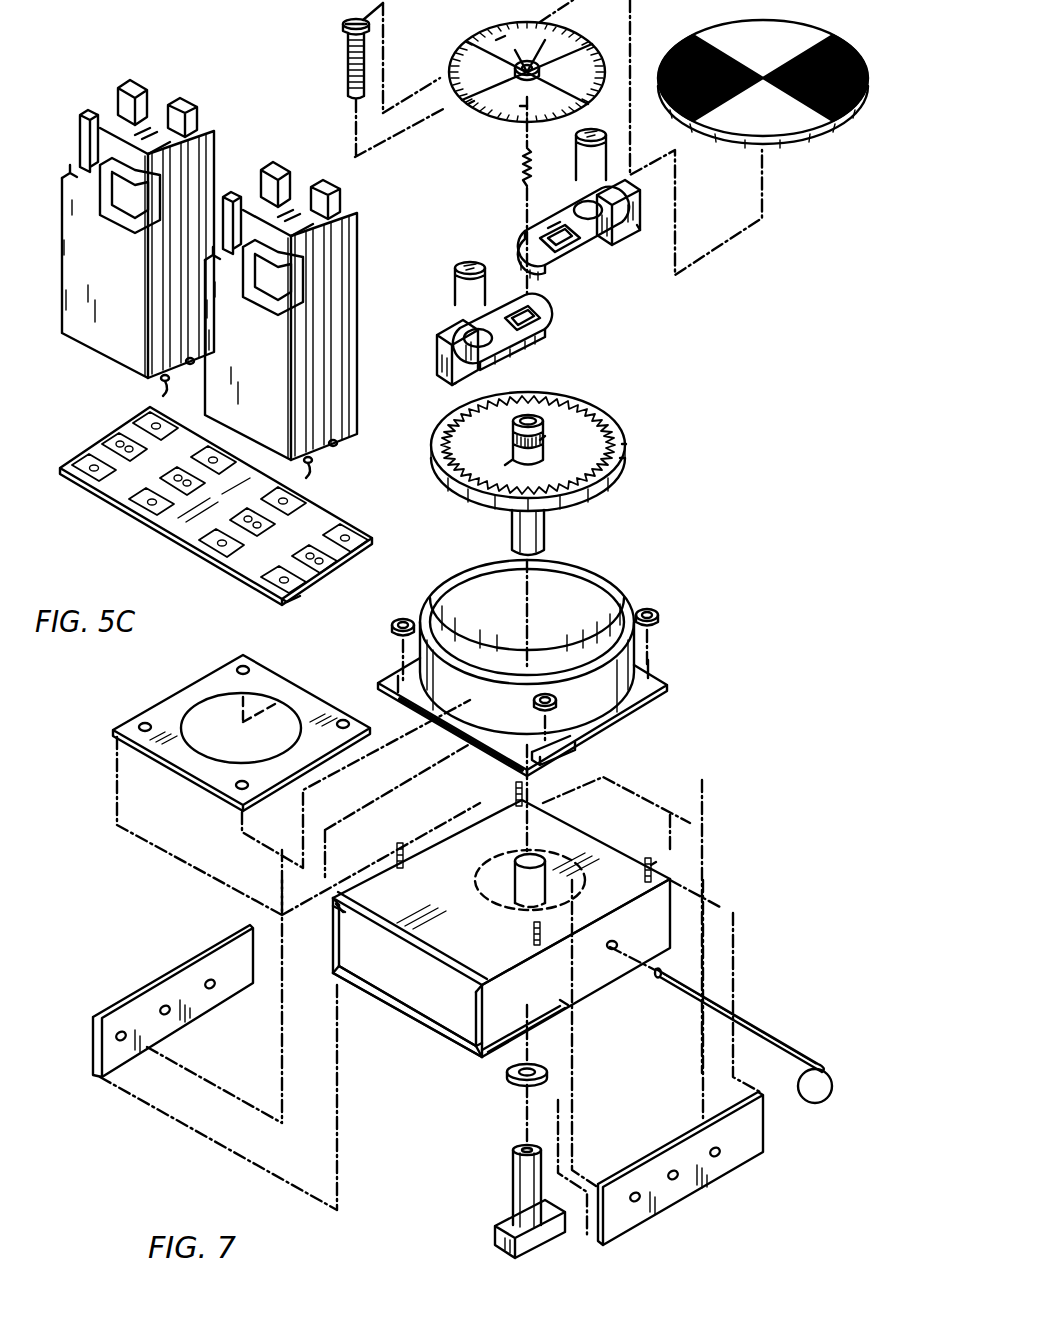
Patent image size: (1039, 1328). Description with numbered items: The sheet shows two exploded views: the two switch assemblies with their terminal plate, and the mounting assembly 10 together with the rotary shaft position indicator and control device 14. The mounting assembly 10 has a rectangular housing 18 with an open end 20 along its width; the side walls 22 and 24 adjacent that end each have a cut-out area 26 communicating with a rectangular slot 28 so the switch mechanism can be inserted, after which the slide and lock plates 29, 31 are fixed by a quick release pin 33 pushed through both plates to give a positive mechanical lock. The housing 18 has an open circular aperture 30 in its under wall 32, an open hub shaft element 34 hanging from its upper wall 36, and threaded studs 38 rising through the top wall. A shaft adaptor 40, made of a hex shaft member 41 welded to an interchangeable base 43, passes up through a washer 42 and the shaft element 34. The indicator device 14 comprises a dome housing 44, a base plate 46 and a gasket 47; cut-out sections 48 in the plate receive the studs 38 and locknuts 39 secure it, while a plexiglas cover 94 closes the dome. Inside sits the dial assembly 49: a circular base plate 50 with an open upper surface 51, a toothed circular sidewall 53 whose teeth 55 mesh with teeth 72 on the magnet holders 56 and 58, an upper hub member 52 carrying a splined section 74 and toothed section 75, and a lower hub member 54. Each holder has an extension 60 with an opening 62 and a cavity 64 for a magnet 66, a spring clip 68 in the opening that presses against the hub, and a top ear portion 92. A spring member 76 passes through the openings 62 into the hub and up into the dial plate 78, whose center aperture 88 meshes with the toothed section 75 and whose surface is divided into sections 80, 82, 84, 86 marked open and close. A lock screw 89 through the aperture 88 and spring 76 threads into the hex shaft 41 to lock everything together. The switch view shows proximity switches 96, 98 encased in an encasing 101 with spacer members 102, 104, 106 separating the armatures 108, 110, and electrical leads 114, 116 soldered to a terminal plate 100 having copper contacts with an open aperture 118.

In FIG. 7, the mounting assembly 10 is at (697, 898).
In FIG. 7, the rotary shaft position indicator and control device 14 is at (665, 638).
In FIG. 7, the rectangular housing 18 is at (607, 853).
In FIG. 7, the open end 20 is at (458, 1036).
In FIG. 7, the side wall 22 is at (560, 1008).
In FIG. 7, the side wall 24 is at (338, 962).
In FIG. 7, the cut-out area 26 is at (340, 936).
In FIG. 7, the rectangular slot 28 is at (345, 928).
In FIG. 7, the slide and lock plate 29 is at (690, 1185).
In FIG. 7, the open circular aperture 30 is at (575, 896).
In FIG. 7, the slide and lock plate 31 is at (140, 1000).
In FIG. 7, the under wall 32 is at (405, 1002).
In FIG. 7, the quick release pin 33 is at (775, 1040).
In FIG. 7, the open hub shaft element 34 is at (543, 856).
In FIG. 7, the upper wall 36 is at (568, 816).
In FIG. 7, the threaded stud 38 is at (656, 864).
In FIG. 7, the locknut 39 is at (656, 607).
In FIG. 7, the shaft adaptor 40 is at (501, 1178).
In FIG. 7, the hex shaft member 41 is at (511, 1196).
In FIG. 7, the washer 42 is at (510, 1086).
In FIG. 7, the interchangeable base 43 is at (497, 1245).
In FIG. 7, the dome housing 44 is at (590, 576).
In FIG. 7, the base plate 46 is at (633, 693).
In FIG. 7, the gasket 47 is at (160, 706).
In FIG. 7, the cut-out section 48 is at (550, 752).
In FIG. 7, the dial assembly 49 is at (663, 348).
In FIG. 7, the circular base plate 50 is at (610, 482).
In FIG. 7, the open upper surface 51 is at (492, 458).
In FIG. 7, the upper hub member 52 is at (546, 446).
In FIG. 7, the circular sidewall 53 is at (626, 446).
In FIG. 7, the lower hub member 54 is at (545, 531).
In FIG. 7, the tooth 55 is at (623, 456).
In FIG. 7, the magnet holder 56 is at (551, 268).
In FIG. 7, the magnet holder 58 is at (460, 372).
In FIG. 7, the extension 60 is at (552, 263).
In FIG. 7, the opening 62 is at (537, 244).
In FIG. 7, the cavity 64 is at (597, 202).
In FIG. 7, the magnet 66 is at (583, 134).
In FIG. 7, the spring clip 68 is at (556, 226).
In FIG. 7, the teeth 72 is at (638, 226).
In FIG. 7, the splined section 74 is at (512, 460).
In FIG. 7, the toothed section 75 is at (540, 440).
In FIG. 7, the spring member 76 is at (519, 180).
In FIG. 7, the dial plate 78 is at (585, 42).
In FIG. 7, the section 80 is at (496, 40).
In FIG. 7, the section 82 is at (603, 90).
In FIG. 7, the section 84 is at (522, 100).
In FIG. 7, the section 86 is at (470, 104).
In FIG. 7, the center aperture 88 is at (520, 106).
In FIG. 7, the lock screw 89 is at (348, 54).
In FIG. 7, the top ear portion 92 is at (627, 188).
In FIG. 7, the plexiglas cover 94 is at (700, 25).
In FIG. 5C, the magnetic proximity switch 96 is at (126, 294).
In FIG. 5C, the magnetic proximity switch 98 is at (266, 378).
In FIG. 5C, the terminal plate 100 is at (190, 530).
In FIG. 5C, the encasing 101 is at (63, 285).
In FIG. 5C, the spacer member 102 is at (205, 131).
In FIG. 5C, the spacer member 104 is at (178, 103).
In FIG. 5C, the spacer member 106 is at (130, 86).
In FIG. 5C, the armature 108 is at (128, 192).
In FIG. 5C, the armature 110 is at (82, 146).
In FIG. 5C, the electrical lead 114 is at (195, 358).
In FIG. 5C, the electrical lead 116 is at (164, 384).
In FIG. 5C, the open aperture 118 is at (281, 602).